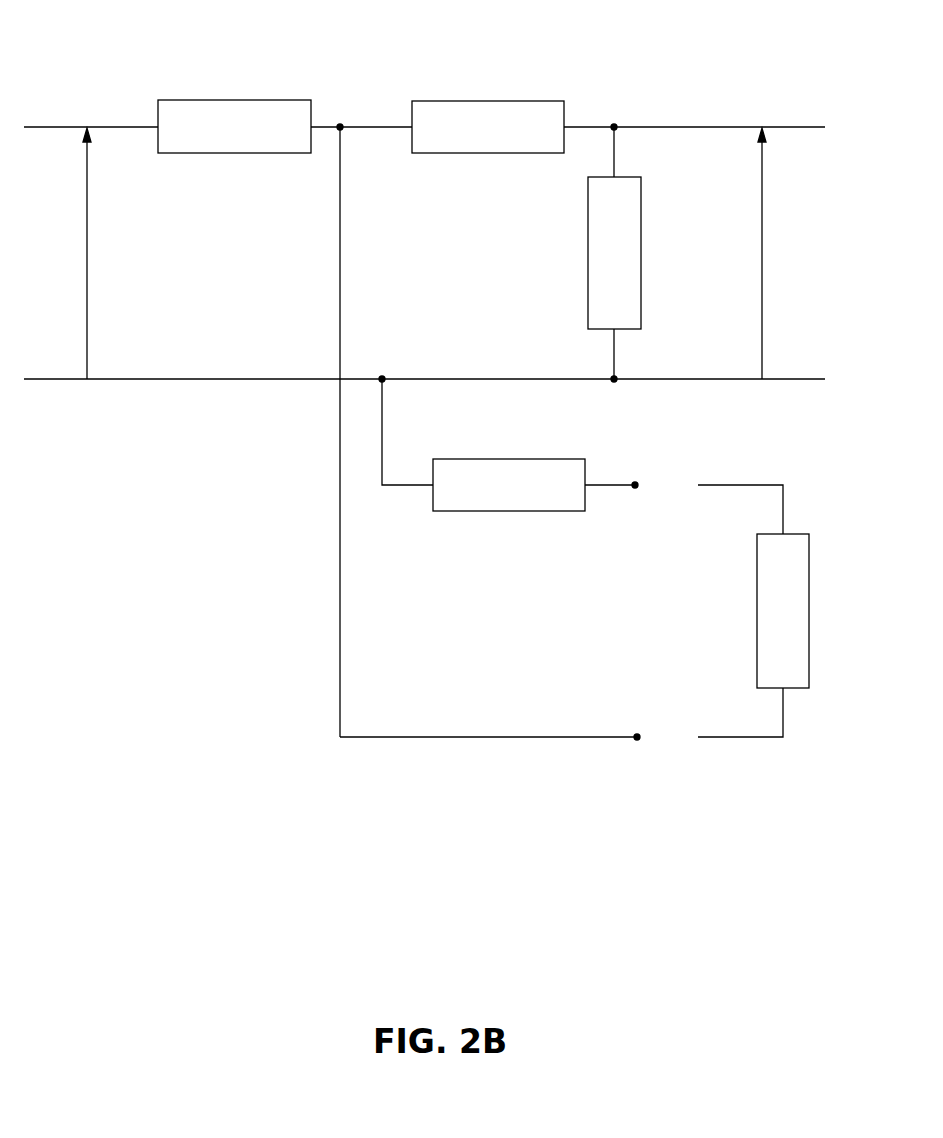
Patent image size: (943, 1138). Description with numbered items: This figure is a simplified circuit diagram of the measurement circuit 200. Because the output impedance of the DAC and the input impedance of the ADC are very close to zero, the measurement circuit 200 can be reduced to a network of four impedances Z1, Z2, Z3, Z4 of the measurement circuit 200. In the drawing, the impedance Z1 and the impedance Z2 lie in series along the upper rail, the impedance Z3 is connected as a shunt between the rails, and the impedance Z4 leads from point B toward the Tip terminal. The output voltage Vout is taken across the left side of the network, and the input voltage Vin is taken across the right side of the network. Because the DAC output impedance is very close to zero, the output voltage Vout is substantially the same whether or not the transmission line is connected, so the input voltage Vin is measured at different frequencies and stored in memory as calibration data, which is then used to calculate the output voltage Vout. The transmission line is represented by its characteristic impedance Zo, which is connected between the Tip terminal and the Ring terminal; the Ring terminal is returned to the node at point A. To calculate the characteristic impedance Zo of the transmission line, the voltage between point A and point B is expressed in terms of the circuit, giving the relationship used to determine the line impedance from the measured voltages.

The measurement circuit 200 is at (90, 68).
The impedance Z1 is at (234, 114).
The impedance Z2 is at (488, 115).
The impedance Z3 is at (633, 253).
The impedance Z4 is at (508, 445).
The characteristic impedance Zo is at (774, 611).
The point A is at (336, 115).
The point B is at (380, 368).
The element Tip is at (630, 472).
The element Ring is at (630, 724).
The output voltage Vout is at (106, 253).
The input voltage Vin is at (776, 253).